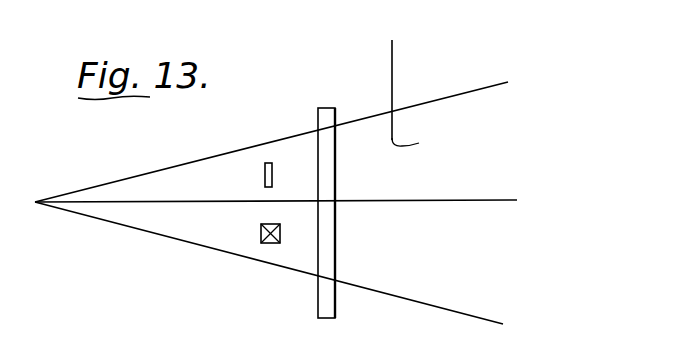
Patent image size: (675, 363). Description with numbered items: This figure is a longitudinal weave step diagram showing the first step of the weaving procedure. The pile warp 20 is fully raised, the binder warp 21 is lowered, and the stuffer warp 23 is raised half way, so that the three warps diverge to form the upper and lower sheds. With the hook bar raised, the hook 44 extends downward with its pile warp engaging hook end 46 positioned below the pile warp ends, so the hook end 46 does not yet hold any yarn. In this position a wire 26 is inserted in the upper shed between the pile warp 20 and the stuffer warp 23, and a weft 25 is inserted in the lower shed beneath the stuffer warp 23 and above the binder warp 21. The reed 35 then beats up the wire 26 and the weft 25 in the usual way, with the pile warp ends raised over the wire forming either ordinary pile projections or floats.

The pile warp 20 is at (204, 160).
The binder warp 21 is at (263, 263).
The stuffer warp 23 is at (232, 201).
The back weft 25 is at (280, 229).
The wire 26 is at (272, 173).
The reed 35 is at (336, 170).
The hook 44 is at (392, 72).
The pile warp engaging hook end 46 is at (419, 141).